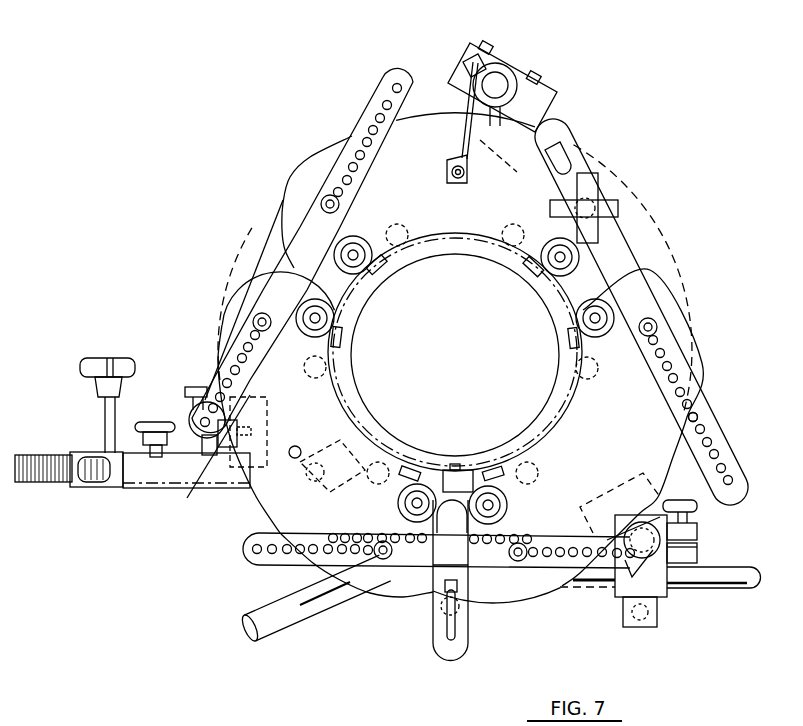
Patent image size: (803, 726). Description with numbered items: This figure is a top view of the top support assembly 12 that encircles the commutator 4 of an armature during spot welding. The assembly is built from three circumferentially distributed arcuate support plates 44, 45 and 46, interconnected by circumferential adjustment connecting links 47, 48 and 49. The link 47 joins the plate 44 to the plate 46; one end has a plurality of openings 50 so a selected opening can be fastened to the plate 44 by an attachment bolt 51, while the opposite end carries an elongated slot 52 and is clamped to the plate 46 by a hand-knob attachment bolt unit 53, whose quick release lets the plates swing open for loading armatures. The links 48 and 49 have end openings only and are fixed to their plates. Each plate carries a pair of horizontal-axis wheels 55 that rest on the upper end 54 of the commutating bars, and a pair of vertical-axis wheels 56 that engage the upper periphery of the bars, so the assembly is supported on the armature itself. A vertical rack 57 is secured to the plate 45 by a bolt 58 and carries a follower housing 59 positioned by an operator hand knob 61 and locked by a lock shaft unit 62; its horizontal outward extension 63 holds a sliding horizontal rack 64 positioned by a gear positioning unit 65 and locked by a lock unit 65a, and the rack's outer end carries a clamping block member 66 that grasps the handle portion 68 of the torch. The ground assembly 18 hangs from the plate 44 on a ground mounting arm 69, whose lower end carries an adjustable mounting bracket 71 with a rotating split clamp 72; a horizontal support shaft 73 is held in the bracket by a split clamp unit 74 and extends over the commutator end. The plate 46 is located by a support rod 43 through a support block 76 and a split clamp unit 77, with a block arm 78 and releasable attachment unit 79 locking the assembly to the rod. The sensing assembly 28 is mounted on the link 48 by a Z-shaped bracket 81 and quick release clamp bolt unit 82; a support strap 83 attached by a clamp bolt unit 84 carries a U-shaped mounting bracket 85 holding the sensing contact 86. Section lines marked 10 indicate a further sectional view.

The commutator 4 is at (523, 288).
The circumferential weld line 10 is at (480, 356).
The top support assembly 12 is at (254, 228).
The ground assembly 18 is at (680, 601).
The sensing assembly 28 is at (445, 450).
The support rod 43 is at (498, 75).
The arcuate support plate 44 is at (701, 352).
The arcuate support plate 45 is at (322, 429).
The arcuate support plate 46 is at (390, 189).
The connecting link 47 is at (627, 257).
The connecting link 48 is at (245, 551).
The connecting link 49 is at (362, 120).
The openings 50 is at (696, 415).
The attachment bolt 51 is at (658, 323).
The elongated slot 52 is at (568, 162).
The attachment bolt unit 53 is at (618, 207).
The upper end of commutating bars 54 is at (353, 407).
The wheels 55 is at (348, 333).
The wheels 56 is at (513, 243).
The vertical rack 57 is at (217, 448).
The attachment bolt 58 is at (251, 427).
The follower housing 59 is at (232, 475).
The operator hand knob 61 is at (240, 323).
The lock shaft unit 62 is at (190, 387).
The horizontal outward extension 63 is at (133, 488).
The horizontal rack 64 is at (37, 455).
The gear positioning unit 65 is at (97, 358).
The lock unit 65a is at (155, 422).
The clamping block member 66 is at (267, 517).
The handle portion 68 is at (303, 614).
The ground mounting arm 69 is at (698, 548).
The adjustable mounting bracket 71 is at (623, 592).
The rotating split clamp 72 is at (698, 532).
The horizontal support shaft 73 is at (750, 586).
The split clamp unit 74 is at (653, 627).
The support block 76 is at (509, 176).
The split clamp unit 77 is at (496, 58).
The block arm 78 is at (466, 138).
The releasable attachment unit 79 is at (472, 67).
The Z-shaped bracket 81 is at (440, 624).
The quick release clamp bolt unit 82 is at (468, 567).
The support strap 83 is at (460, 648).
The clamp bolt unit 84 is at (440, 608).
The U-shaped mounting bracket 85 is at (482, 466).
The sensing contact 86 is at (456, 464).